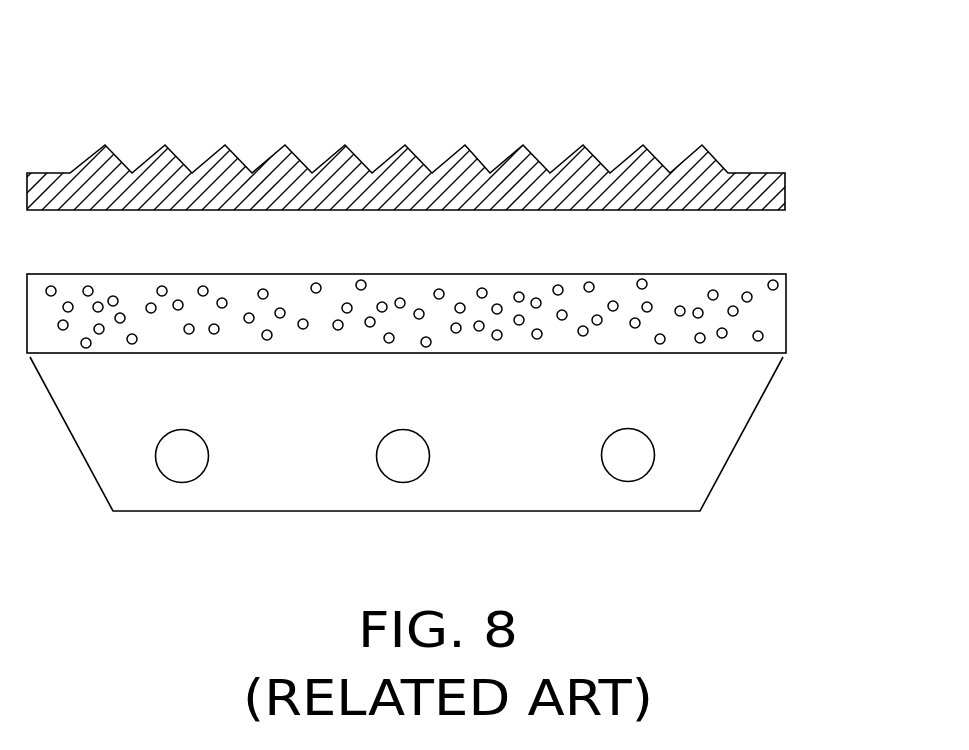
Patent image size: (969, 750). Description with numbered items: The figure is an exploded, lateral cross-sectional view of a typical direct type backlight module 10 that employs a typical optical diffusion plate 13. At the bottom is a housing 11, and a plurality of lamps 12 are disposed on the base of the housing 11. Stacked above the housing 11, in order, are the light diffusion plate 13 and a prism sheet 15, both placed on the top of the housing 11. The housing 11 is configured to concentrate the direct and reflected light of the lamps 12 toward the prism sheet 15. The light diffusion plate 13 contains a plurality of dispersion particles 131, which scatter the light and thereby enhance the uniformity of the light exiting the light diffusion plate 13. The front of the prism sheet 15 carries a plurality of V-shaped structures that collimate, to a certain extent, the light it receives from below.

The backlight module 10 is at (453, 53).
The housing 11 is at (755, 413).
The lamps 12 is at (638, 458).
The light diffusion plate 13 is at (455, 306).
The dispersion particles 131 is at (778, 283).
The prism sheet 15 is at (786, 196).